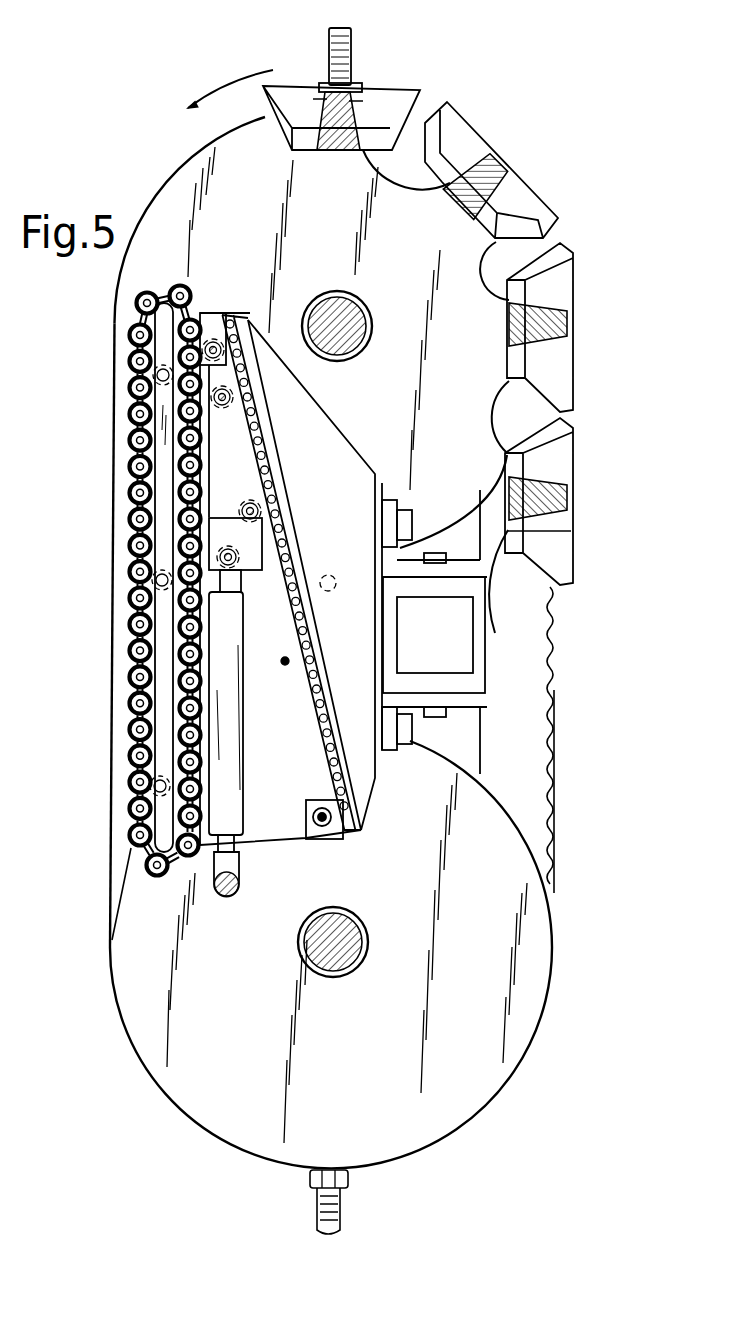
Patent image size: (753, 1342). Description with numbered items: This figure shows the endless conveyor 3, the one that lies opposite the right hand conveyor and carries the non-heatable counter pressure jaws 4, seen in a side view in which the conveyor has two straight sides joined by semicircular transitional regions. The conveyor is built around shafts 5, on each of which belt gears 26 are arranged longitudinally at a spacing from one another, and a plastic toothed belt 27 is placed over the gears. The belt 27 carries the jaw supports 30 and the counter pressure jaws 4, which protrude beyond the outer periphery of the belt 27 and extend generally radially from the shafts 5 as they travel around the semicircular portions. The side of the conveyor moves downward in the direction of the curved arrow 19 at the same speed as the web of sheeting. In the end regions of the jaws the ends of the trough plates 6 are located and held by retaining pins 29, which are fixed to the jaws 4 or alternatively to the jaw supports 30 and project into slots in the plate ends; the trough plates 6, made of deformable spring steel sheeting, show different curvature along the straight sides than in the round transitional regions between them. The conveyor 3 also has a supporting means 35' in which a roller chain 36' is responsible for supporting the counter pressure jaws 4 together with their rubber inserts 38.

The endless conveyor 3 is at (147, 200).
The counter pressure jaws 4 is at (510, 180).
The shaft 5 is at (355, 318).
The trough plate 6 is at (509, 272).
The curved arrow 19 is at (227, 83).
The belt gear 26 is at (523, 1022).
The plastic toothed belt 27 is at (555, 788).
The retaining pins 29 is at (572, 531).
The jaw supports 30 is at (375, 137).
The supporting means 35' is at (115, 577).
The roller chain 36' is at (125, 581).
The rubber inserts 38 is at (500, 153).